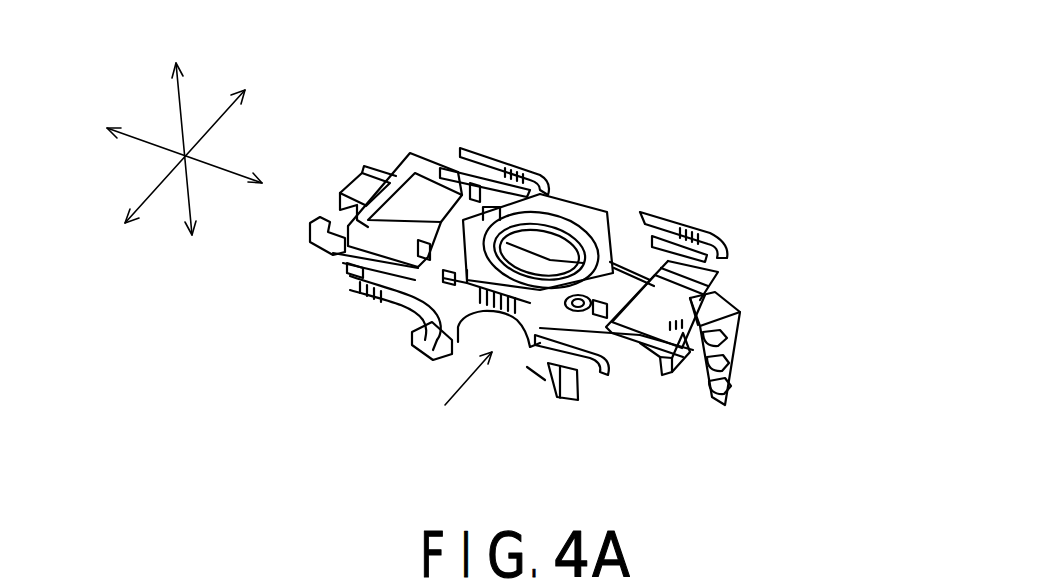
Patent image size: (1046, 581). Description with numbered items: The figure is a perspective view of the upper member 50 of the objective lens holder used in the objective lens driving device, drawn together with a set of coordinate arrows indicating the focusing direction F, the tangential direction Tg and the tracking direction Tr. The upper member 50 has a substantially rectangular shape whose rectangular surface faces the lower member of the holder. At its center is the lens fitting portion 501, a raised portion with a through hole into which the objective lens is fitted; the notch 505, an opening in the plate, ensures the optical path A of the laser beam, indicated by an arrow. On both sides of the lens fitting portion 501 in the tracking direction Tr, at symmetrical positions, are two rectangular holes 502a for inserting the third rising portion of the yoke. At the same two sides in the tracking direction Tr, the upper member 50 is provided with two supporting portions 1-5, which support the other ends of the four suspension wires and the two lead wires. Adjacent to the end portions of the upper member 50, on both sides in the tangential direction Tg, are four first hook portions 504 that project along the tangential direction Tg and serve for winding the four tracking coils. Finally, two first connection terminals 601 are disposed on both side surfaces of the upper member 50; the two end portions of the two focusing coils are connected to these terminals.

The upper member 50 is at (663, 97).
The lens fitting portion 501 is at (585, 205).
The rectangular holes 502a is at (428, 158).
The first hook portions 504 is at (505, 155).
The notch 505 is at (460, 347).
The first connection terminals 601 is at (307, 233).
The supporting portions 1-5 is at (347, 192).
The optical path A is at (463, 385).
The focusing direction F is at (178, 113).
The tangential direction Tg is at (213, 118).
The tracking direction Tr is at (133, 140).